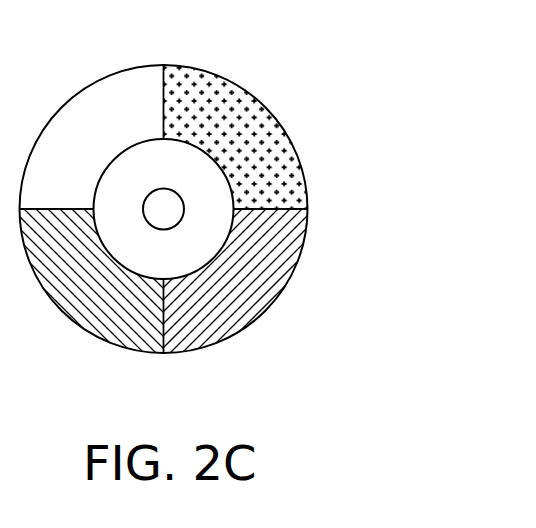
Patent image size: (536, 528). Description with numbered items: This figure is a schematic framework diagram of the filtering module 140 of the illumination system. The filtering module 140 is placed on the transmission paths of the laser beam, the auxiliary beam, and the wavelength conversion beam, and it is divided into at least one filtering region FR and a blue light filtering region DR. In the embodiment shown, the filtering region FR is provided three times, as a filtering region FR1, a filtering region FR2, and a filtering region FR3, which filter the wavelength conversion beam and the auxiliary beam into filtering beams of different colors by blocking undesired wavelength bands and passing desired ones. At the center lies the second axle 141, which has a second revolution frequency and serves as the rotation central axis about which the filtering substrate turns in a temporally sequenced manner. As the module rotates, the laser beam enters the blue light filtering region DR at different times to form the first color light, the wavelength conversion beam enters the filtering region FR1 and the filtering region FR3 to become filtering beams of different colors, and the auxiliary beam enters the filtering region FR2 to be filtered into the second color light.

The filtering module 140 is at (355, 392).
The second axle 141 is at (154, 191).
The filtering region FR1 is at (142, 87).
The filtering region FR2 is at (273, 146).
The filtering region FR3 is at (277, 250).
The filtering region FR is at (383, 65).
The blue light filtering region DR is at (118, 315).